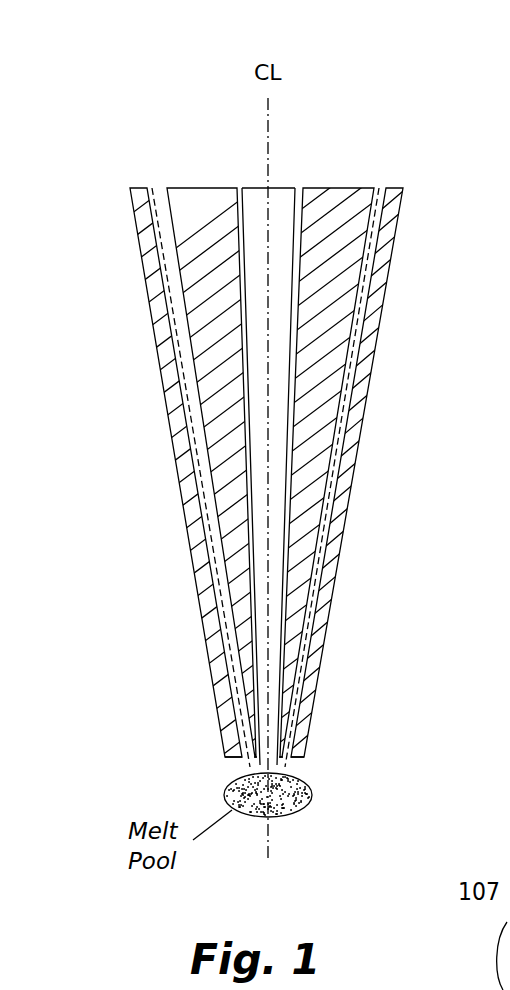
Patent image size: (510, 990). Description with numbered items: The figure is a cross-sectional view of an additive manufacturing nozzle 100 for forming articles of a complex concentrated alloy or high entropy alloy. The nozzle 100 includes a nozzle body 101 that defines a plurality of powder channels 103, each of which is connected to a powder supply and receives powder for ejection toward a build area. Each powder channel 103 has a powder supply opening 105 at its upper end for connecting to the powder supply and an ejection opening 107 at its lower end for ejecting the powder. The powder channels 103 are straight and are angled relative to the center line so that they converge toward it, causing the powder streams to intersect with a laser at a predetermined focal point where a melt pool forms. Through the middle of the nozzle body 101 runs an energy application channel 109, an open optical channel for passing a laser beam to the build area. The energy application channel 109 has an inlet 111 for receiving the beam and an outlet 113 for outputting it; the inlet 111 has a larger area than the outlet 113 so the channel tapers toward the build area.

The additive manufacturing nozzle 100 is at (167, 112).
The nozzle body 101 is at (205, 312).
The powder channel 103 is at (191, 412).
The powder supply opening 105 is at (152, 184).
The ejection opening 107 is at (233, 758).
The energy application channel 109 is at (293, 178).
The inlet 111 is at (241, 186).
The outlet 113 is at (266, 752).